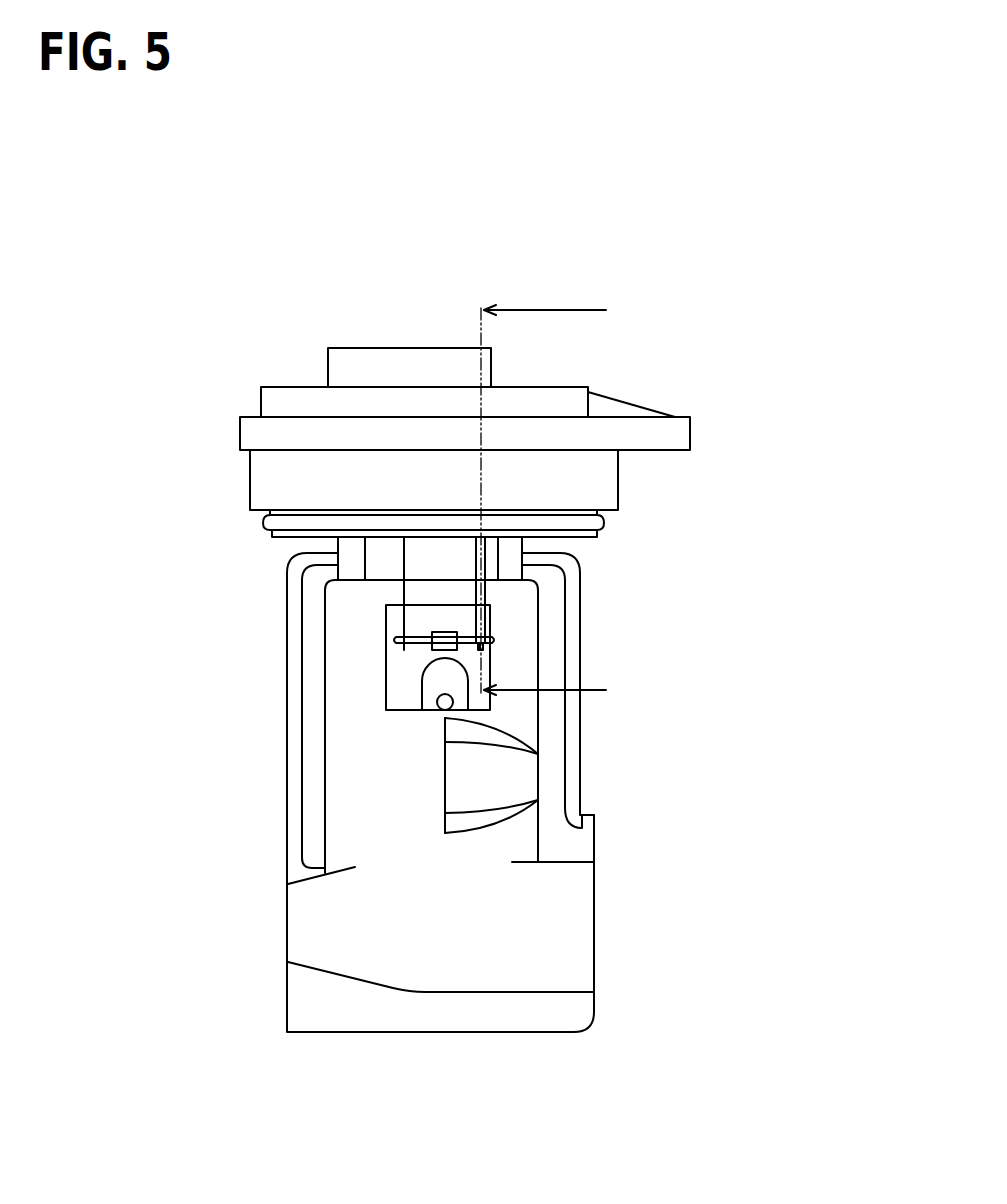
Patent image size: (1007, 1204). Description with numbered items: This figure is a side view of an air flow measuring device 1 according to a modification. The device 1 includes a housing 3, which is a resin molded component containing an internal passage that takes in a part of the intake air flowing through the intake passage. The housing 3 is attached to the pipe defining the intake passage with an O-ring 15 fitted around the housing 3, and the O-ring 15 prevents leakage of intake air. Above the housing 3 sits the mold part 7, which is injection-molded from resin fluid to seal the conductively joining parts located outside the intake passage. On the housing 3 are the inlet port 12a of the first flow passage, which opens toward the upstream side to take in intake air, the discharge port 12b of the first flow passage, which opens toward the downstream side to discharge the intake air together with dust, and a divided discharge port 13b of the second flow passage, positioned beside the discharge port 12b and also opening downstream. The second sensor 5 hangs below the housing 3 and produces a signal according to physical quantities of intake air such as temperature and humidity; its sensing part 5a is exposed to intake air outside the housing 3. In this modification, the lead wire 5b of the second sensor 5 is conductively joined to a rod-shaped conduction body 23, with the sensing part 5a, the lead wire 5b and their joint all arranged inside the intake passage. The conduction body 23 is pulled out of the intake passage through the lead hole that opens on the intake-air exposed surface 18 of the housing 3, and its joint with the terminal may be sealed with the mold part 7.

The air flow measuring device 1 is at (707, 256).
The housing 3 is at (594, 757).
The second sensor 5 is at (207, 565).
The sensing part 5a is at (433, 648).
The lead wire 5b is at (417, 637).
The mold part 7 is at (310, 435).
The inlet port 12a is at (594, 945).
The discharge port 12b is at (287, 933).
The discharge port 13b is at (445, 797).
The O-ring 15 is at (285, 522).
The intake-air exposed surface 18 is at (495, 538).
The conduction body 23 is at (485, 594).